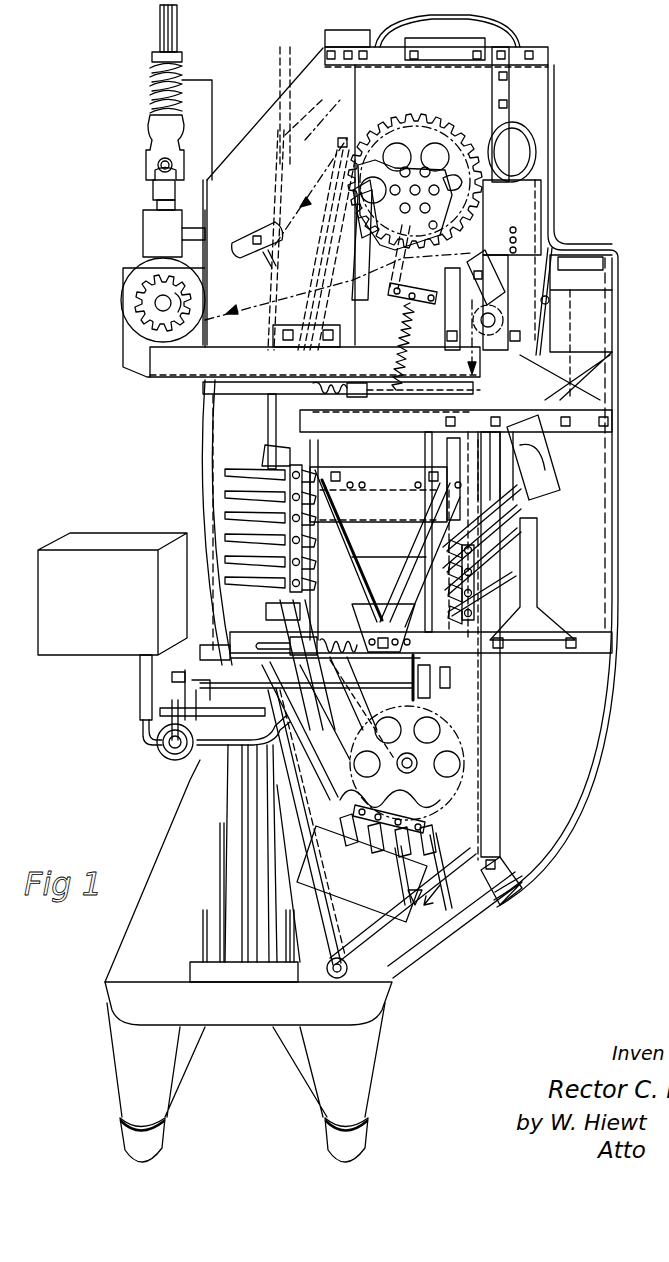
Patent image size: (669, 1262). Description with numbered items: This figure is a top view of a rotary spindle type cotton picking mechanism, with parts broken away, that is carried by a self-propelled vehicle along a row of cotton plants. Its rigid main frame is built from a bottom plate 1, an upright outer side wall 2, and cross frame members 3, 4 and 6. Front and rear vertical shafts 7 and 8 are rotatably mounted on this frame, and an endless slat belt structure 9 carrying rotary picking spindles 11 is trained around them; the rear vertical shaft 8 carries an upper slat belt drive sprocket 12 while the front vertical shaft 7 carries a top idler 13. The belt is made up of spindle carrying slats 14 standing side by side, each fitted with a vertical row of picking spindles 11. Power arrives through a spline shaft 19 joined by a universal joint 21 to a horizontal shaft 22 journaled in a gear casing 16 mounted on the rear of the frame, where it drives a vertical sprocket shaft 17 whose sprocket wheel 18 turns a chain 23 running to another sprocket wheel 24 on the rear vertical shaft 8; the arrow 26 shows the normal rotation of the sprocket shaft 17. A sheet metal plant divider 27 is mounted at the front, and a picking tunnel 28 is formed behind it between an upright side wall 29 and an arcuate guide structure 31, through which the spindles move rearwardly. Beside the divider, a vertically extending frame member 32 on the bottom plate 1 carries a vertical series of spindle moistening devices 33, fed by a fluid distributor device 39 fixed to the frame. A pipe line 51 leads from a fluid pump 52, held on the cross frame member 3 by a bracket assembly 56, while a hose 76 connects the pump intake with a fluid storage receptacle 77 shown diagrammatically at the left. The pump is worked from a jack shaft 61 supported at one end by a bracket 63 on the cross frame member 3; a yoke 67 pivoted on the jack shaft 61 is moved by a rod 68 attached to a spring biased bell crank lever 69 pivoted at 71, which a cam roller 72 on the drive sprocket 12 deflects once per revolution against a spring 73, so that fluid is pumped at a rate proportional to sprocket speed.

The bottom plate 1 is at (572, 788).
The upright outer side wall 2 is at (612, 530).
The cross frame member 3 is at (612, 644).
The cross frame member 4 is at (585, 432).
The cross frame member 6 is at (170, 377).
The front vertical shaft 7 is at (415, 764).
The rear vertical shaft 8 is at (452, 187).
The endless slat belt structure 9 is at (288, 478).
The rotary picking spindles 11 is at (230, 516).
The upper slat belt drive sprocket 12 is at (395, 255).
The top idler 13 is at (432, 805).
The spindle carrying slats 14 is at (438, 833).
The gear casing 16 is at (125, 278).
The sprocket shaft 17 is at (155, 303).
The sprocket wheel 18 is at (176, 312).
The spline shaft 19 is at (160, 28).
The universal joint 21 is at (147, 160).
The horizontal shaft 22 is at (152, 192).
The chain 23 is at (262, 292).
The sprocket wheel 24 is at (417, 118).
The arrow 26 is at (252, 256).
The plant divider 27 is at (248, 1026).
The picking tunnel 28 is at (270, 412).
The upright side wall 29 is at (208, 466).
The arcuate guide structure 31 is at (270, 460).
The vertically extending frame member 32 is at (380, 898).
The spindle moistening devices 33 is at (445, 870).
The fluid distributor device 39 is at (330, 978).
The pipe line 51 is at (312, 860).
The fluid pump 52 is at (160, 762).
The bracket assembly 56 is at (240, 700).
The jack shaft 61 is at (262, 692).
The bracket 63 is at (412, 668).
The yoke 67 is at (410, 690).
The rod 68 is at (423, 440).
The bell crank lever 69 is at (401, 318).
The pivot 71 is at (390, 293).
The cam roller 72 is at (435, 222).
The spring 73 is at (395, 380).
The hose 76 is at (140, 706).
The fluid storage receptacle 77 is at (60, 656).